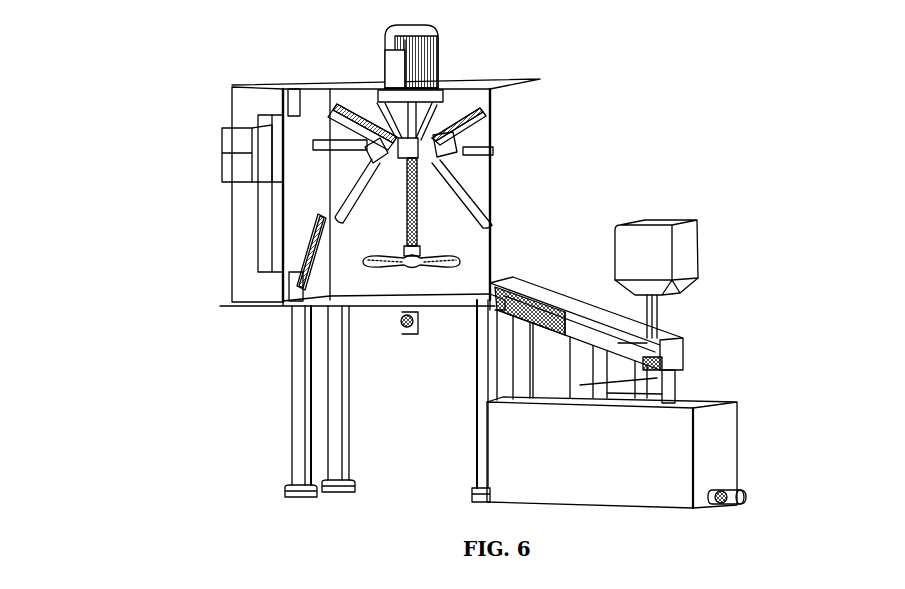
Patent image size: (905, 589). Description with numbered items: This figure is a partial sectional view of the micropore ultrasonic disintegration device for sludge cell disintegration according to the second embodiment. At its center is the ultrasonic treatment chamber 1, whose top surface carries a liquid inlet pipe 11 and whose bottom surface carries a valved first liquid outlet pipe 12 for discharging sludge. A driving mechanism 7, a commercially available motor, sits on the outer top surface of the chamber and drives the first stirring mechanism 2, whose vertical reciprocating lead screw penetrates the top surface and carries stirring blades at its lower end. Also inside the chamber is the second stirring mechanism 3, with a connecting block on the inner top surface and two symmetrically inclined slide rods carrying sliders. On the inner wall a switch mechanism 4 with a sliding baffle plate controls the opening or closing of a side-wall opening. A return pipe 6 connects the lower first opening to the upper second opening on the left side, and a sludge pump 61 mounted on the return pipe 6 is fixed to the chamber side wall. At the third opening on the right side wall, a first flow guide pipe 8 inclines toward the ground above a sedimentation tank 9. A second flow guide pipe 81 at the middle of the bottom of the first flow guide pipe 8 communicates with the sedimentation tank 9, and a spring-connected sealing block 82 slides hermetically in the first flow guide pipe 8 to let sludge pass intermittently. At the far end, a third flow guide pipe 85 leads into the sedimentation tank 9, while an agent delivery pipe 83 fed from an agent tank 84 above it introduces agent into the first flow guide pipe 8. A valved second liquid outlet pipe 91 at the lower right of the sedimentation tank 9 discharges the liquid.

The ultrasonic treatment chamber 1 is at (495, 81).
The liquid inlet pipe 11 is at (440, 58).
The first liquid outlet pipe 12 is at (402, 324).
The first stirring mechanism 2 is at (420, 204).
The second stirring mechanism 3 is at (383, 148).
The switch mechanism 4 is at (295, 270).
The return pipe 6 is at (263, 97).
The sludge pump 61 is at (253, 153).
The driving mechanism 7 is at (385, 34).
The first flow guide pipe 8 is at (580, 305).
The second flow guide pipe 81 is at (676, 378).
The sealing block 82 is at (660, 343).
The agent delivery pipe 83 is at (656, 312).
The agent tank 84 is at (700, 227).
The third flow guide pipe 85 is at (600, 397).
The sedimentation tank 9 is at (707, 445).
The second liquid outlet pipe 91 is at (740, 490).